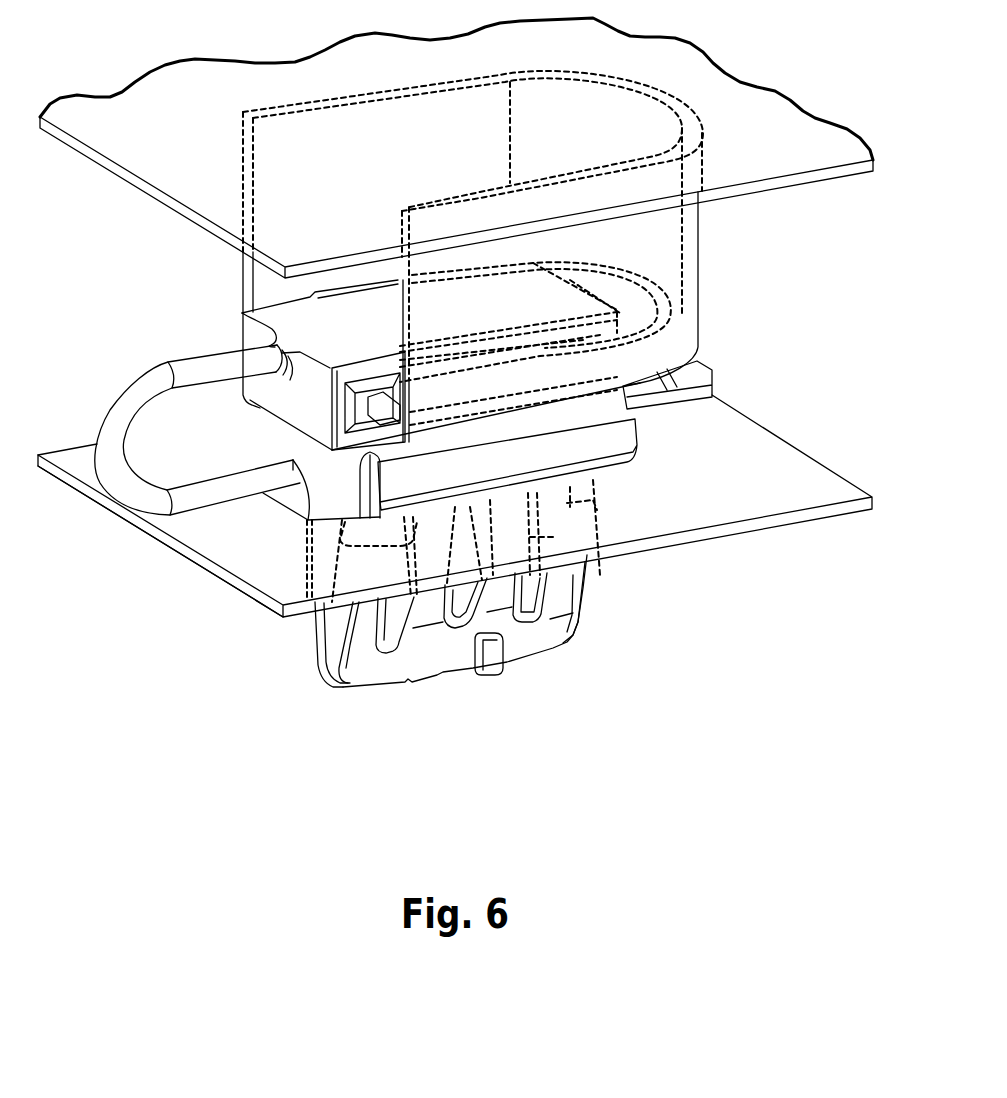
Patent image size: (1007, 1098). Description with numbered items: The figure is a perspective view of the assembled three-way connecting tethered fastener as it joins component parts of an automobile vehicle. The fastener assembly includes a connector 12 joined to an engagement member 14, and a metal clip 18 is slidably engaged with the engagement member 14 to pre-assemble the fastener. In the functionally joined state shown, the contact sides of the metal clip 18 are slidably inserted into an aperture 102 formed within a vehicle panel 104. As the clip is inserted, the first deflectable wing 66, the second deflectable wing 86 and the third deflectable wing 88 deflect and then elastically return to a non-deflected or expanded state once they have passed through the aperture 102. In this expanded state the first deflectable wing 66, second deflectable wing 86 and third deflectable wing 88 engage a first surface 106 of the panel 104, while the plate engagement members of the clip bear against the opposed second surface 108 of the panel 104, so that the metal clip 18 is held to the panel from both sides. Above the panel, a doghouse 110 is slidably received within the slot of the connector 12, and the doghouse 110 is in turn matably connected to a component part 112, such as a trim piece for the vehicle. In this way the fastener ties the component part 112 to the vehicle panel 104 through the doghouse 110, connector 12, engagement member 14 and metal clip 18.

The component part 112 is at (150, 113).
The doghouse 110 is at (693, 245).
The connector 12 is at (310, 322).
The second surface 108 is at (82, 458).
The vehicle panel 104 is at (183, 550).
The aperture 102 is at (288, 518).
The first surface 106 is at (256, 602).
The engagement member 14 is at (653, 410).
The metal clip 18 is at (557, 637).
The second deflectable wing 86 is at (573, 573).
The third deflectable wing 88 is at (368, 622).
The first deflectable wing 66 is at (457, 612).